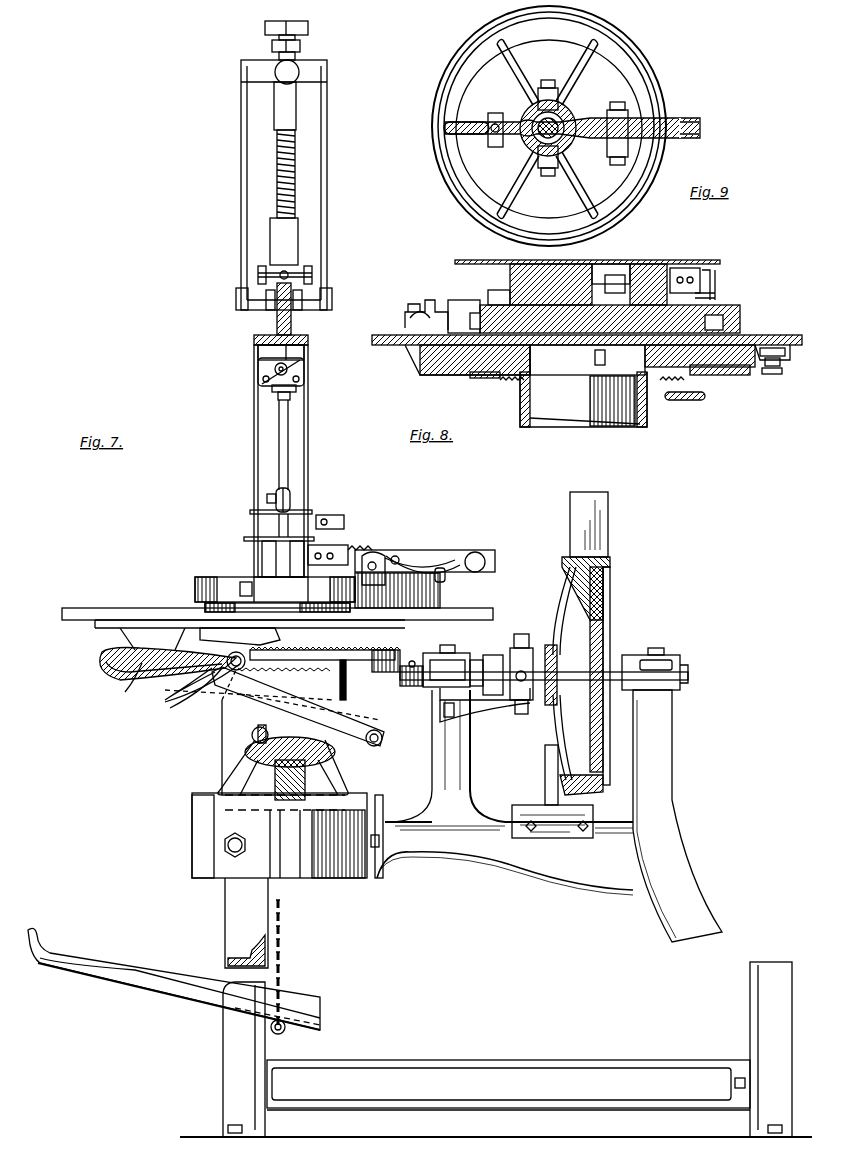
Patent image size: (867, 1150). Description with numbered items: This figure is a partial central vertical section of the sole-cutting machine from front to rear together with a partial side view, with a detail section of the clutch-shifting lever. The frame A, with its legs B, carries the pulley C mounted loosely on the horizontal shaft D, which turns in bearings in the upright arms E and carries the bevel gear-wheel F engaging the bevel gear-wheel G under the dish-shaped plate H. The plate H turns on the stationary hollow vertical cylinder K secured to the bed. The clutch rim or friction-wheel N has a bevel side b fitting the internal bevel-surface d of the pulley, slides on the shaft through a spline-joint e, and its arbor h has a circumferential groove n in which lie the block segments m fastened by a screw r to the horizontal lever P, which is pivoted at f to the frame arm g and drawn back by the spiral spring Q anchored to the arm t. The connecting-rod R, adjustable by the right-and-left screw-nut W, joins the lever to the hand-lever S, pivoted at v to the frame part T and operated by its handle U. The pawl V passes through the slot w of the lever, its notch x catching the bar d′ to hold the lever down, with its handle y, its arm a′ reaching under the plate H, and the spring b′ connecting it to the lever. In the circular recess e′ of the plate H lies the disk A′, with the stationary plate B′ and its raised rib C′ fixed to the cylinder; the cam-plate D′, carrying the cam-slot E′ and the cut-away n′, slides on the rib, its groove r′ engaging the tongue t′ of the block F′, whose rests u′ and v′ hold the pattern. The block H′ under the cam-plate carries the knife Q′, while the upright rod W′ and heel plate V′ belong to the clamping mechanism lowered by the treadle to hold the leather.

In FIG. 7, the frame A is at (254, 344).
In FIG. 8, the circular plate or disk A′ is at (432, 372).
In FIG. 7, the legs B is at (496, 1049).
In FIG. 8, the stationary circular plate B′ is at (445, 330).
In FIG. 7, the pulley C is at (612, 590).
In FIG. 7, the central transverse raised rib C′ is at (247, 528).
In FIG. 8, the central transverse raised rib C′ is at (576, 255).
In FIG. 7, the horizontal shaft D is at (622, 660).
In FIG. 9, the horizontal shaft D is at (526, 148).
In FIG. 7, the cam-plate D′ is at (195, 586).
In FIG. 8, the cam-plate D′ is at (746, 306).
In FIG. 7, the upright arms E is at (549, 816).
In FIG. 8, the cam-slot E′ is at (540, 345).
In FIG. 7, the bevel gear-wheel F is at (414, 682).
In FIG. 7, the block F′ is at (400, 598).
In FIG. 8, the block F′ is at (575, 263).
In FIG. 7, the bevel gear-wheel G is at (330, 660).
In FIG. 8, the bevel gear-wheel G is at (596, 397).
In FIG. 7, the circular dish-shaped plate or disk H is at (485, 608).
In FIG. 8, the circular dish-shaped plate or disk H is at (800, 332).
In FIG. 7, the block H′ is at (364, 555).
In FIG. 8, the downward central hollow cylindrical portion J is at (526, 428).
In FIG. 7, the hollow vertical cylinder K is at (228, 743).
In FIG. 7, the circular rim or friction-wheel N is at (566, 574).
In FIG. 9, the circular rim or friction-wheel N is at (436, 106).
In FIG. 7, the horizontal lever P is at (510, 660).
In FIG. 9, the horizontal lever P is at (660, 124).
In FIG. 8, the horizontal lever P is at (690, 398).
In FIG. 7, the spiral spring Q is at (340, 537).
In FIG. 8, the knife or cutter Q′ is at (672, 265).
In FIG. 7, the connecting-rod R is at (468, 656).
In FIG. 7, the hand-lever S is at (100, 662).
In FIG. 7, the frame part or arm T is at (274, 713).
In FIG. 7, the handle U is at (130, 684).
In FIG. 7, the pawl V is at (252, 730).
In FIG. 7, the heel clamping plate V′ is at (312, 512).
In FIG. 7, the right-and-left screw-nut W is at (432, 660).
In FIG. 7, the downwardly-projecting rod W′ is at (279, 456).
In FIG. 7, the pawl arm a′ is at (282, 640).
In FIG. 7, the bevel side b is at (562, 562).
In FIG. 7, the spiral spring b′ is at (284, 673).
In FIG. 7, the internal bevel-surface d is at (610, 562).
In FIG. 7, the shoulder or bar d′ is at (237, 734).
In FIG. 7, the spline-joint e is at (544, 670).
In FIG. 8, the circular recess e′ is at (782, 323).
In FIG. 7, the pivot f is at (495, 660).
In FIG. 9, the pivot f is at (630, 140).
In FIG. 7, the frame arm g is at (521, 675).
In FIG. 9, the frame arm g is at (612, 150).
In FIG. 7, the arbor h is at (485, 706).
In FIG. 9, the arbor h is at (570, 140).
In FIG. 9, the block segments m is at (562, 110).
In FIG. 9, the circumferential groove n is at (518, 122).
In FIG. 8, the cut-away portion n′ is at (606, 328).
In FIG. 7, the screw r is at (509, 629).
In FIG. 9, the screw r is at (548, 88).
In FIG. 7, the longitudinal groove r′ is at (246, 590).
In FIG. 8, the longitudinal groove r′ is at (726, 291).
In FIG. 8, the frame arm t is at (499, 291).
In FIG. 7, the tongue or rib t′ is at (281, 589).
In FIG. 8, the rest u′ is at (518, 262).
In FIG. 7, the pivot v is at (382, 734).
In FIG. 8, the rest v′ is at (653, 245).
In FIG. 7, the vertical slot w is at (355, 712).
In FIG. 7, the notch x is at (608, 518).
In FIG. 7, the pawl handle y is at (194, 694).